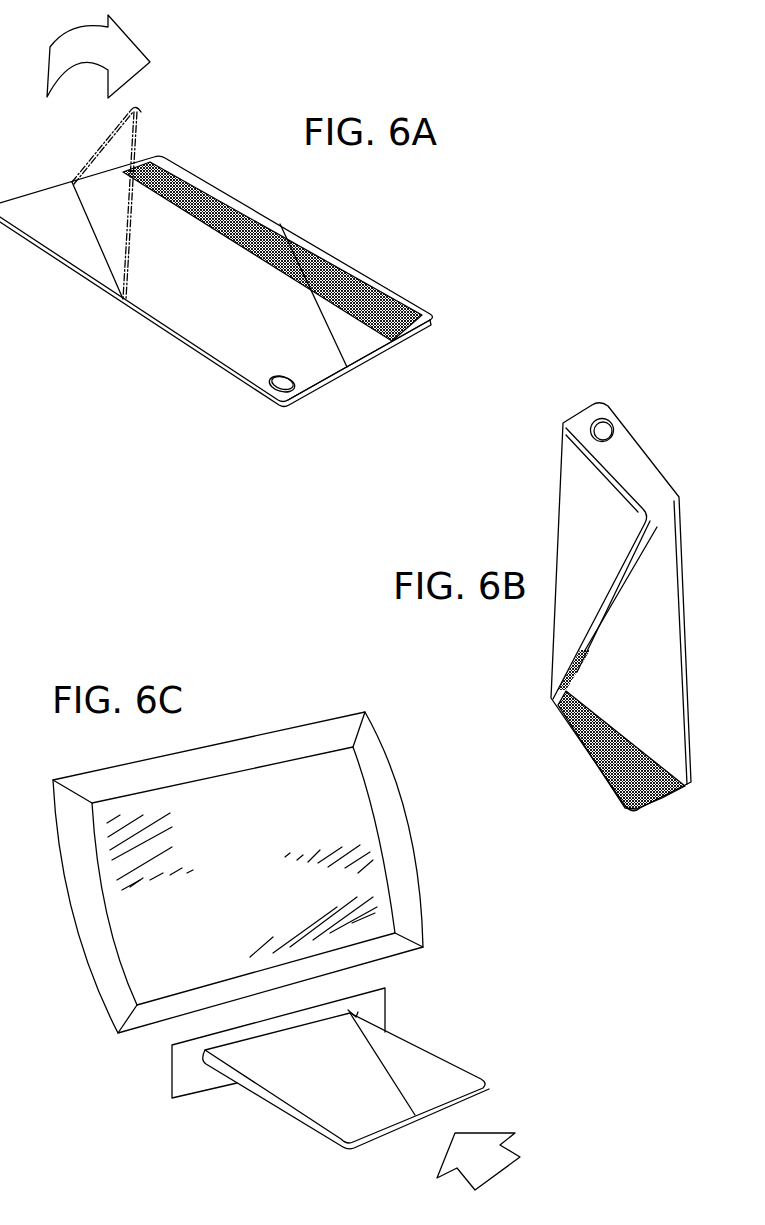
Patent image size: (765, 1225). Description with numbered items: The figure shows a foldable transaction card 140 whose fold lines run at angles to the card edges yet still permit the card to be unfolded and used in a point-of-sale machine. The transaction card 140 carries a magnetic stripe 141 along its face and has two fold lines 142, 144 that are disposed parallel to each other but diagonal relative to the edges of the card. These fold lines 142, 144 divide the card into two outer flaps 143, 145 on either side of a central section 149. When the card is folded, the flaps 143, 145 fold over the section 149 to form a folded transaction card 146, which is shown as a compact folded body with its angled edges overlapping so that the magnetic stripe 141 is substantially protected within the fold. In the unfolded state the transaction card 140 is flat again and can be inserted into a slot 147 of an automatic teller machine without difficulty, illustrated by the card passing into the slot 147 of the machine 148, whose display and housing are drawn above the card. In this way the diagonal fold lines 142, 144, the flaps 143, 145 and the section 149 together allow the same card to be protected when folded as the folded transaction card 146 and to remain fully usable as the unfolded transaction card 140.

In FIG. 6A, the foldable transaction card 140 is at (257, 367).
In FIG. 6C, the foldable transaction card 140 is at (323, 1120).
In FIG. 6A, the magnetic stripe 141 is at (197, 183).
In FIG. 6A, the fold line 142 is at (122, 302).
In FIG. 6A, the flap 143 is at (21, 213).
In FIG. 6A, the fold line 144 is at (348, 371).
In FIG. 6A, the flap 145 is at (403, 303).
In FIG. 6B, the folded transaction card 146 is at (593, 545).
In FIG. 6C, the slot 147 is at (360, 1010).
In FIG. 6C, the display device 148 is at (367, 831).
In FIG. 6A, the section 149 is at (213, 333).